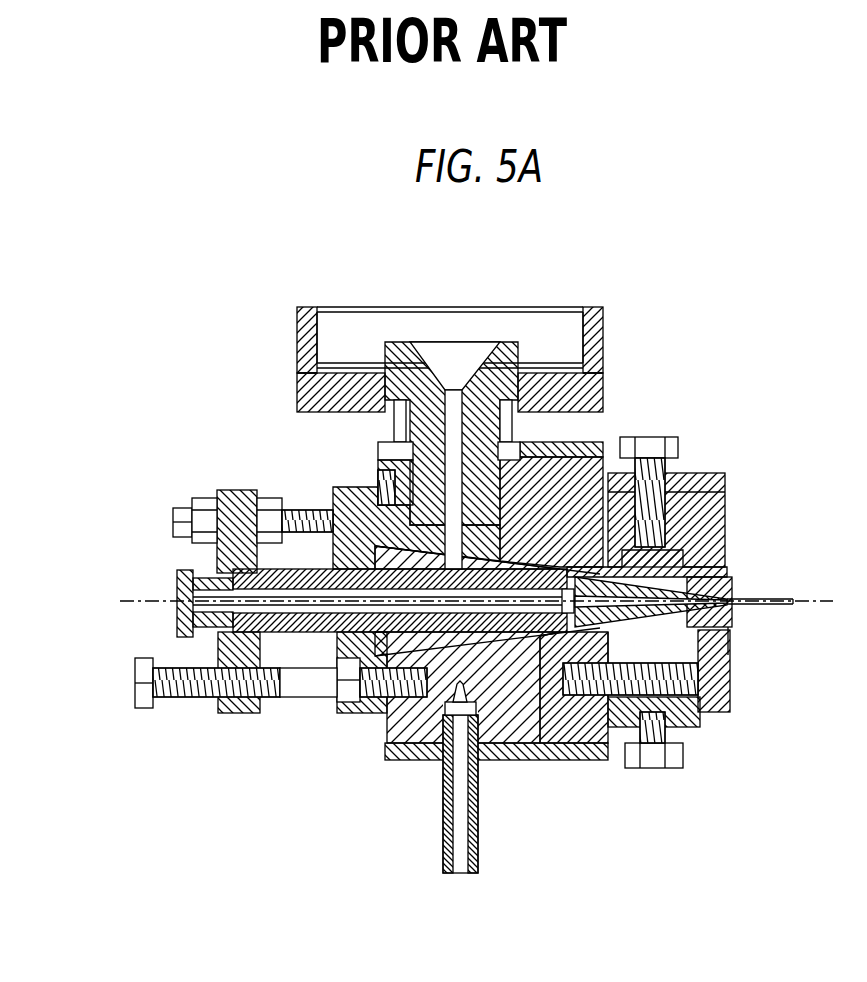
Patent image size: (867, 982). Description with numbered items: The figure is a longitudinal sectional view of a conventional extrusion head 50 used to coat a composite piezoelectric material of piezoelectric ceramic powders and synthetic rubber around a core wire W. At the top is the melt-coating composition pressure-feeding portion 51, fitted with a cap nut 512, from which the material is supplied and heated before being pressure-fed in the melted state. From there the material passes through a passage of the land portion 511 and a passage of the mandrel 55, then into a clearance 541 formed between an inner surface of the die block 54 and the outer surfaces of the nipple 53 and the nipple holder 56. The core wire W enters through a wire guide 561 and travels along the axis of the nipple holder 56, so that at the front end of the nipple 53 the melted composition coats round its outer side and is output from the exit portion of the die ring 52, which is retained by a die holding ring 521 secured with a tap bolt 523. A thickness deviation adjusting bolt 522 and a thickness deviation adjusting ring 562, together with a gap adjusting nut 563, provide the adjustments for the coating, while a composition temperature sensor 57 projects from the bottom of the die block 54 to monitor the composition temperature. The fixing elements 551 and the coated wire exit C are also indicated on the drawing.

The extrusion head 50 is at (735, 284).
The melt-coating composition pressure-feeding portion 51 is at (450, 359).
The land portion 511 is at (500, 425).
The cap nut 512 is at (350, 400).
The die ring 52 is at (727, 620).
The nipple 53 is at (733, 585).
The die block 54 is at (563, 743).
The clearance 541 is at (700, 566).
The mandrel 55 is at (500, 630).
The fixing screws 551 is at (378, 472).
The nipple holder 56 is at (293, 632).
The wire guide 561 is at (185, 570).
The thickness deviation adjusting ring 562 is at (232, 712).
The gap adjusting nut 563 is at (225, 490).
The die holding ring 521 is at (722, 518).
The thickness deviation adjusting bolt 522 is at (680, 448).
The tap bolt 523 is at (728, 683).
The composition temperature sensor 57 is at (443, 832).
The core wire W is at (135, 600).
The wire tip C is at (795, 604).